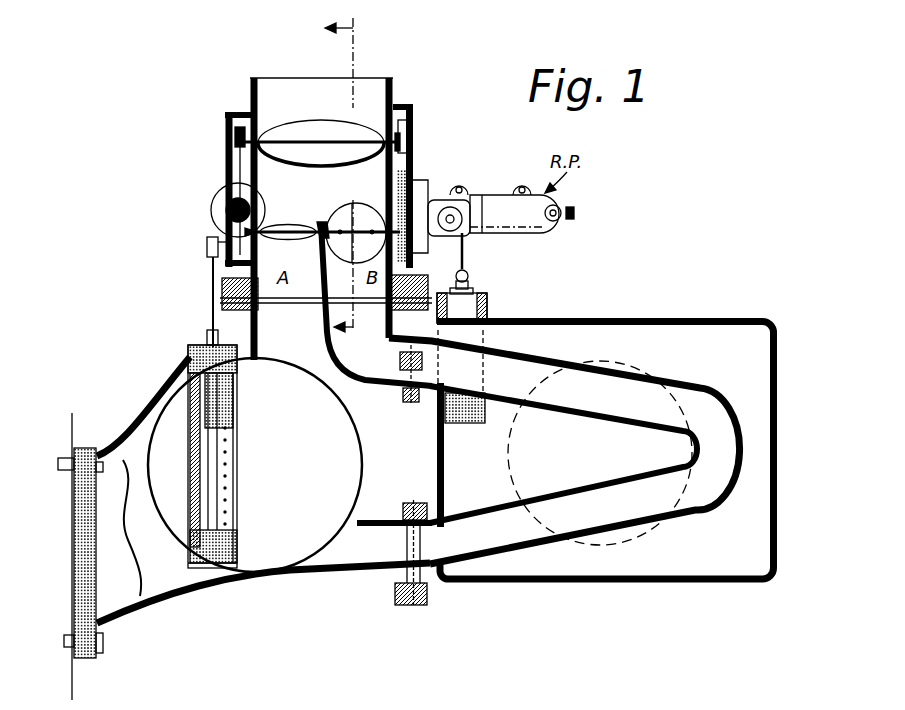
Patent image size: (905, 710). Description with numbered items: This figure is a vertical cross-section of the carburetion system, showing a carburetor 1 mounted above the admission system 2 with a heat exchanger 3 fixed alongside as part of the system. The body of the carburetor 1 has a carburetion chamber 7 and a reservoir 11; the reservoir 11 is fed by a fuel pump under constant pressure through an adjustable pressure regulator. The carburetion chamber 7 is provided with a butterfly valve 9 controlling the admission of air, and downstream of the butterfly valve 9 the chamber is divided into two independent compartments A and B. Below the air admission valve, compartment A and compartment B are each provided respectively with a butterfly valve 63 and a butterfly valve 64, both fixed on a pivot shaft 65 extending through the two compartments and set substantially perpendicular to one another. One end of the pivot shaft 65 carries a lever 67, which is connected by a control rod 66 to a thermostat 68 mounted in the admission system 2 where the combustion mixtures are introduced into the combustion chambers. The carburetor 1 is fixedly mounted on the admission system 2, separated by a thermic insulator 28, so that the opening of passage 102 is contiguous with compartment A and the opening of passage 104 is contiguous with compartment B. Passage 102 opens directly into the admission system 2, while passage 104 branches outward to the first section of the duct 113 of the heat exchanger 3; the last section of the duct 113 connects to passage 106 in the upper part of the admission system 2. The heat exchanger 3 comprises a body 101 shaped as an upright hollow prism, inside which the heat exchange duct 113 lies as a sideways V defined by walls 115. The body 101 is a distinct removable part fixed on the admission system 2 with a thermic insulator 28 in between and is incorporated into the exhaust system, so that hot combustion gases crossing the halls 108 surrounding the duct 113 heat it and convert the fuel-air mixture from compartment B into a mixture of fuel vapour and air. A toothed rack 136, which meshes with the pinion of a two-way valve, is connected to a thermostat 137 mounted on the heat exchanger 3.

The carburetor 1 is at (418, 77).
The admission system 2 is at (146, 417).
The heat exchanger 3 is at (774, 318).
The carburetion chamber 7 is at (272, 82).
The butterfly valve 9 is at (304, 130).
The reservoir 11 is at (425, 178).
The thermic insulator 28 is at (250, 302).
The butterfly valve 63 is at (290, 225).
The butterfly valve 64 is at (350, 215).
The pivot shaft 65 is at (215, 222).
The control rod 66 is at (211, 283).
The lever 67 is at (207, 247).
The thermostat 68 is at (227, 462).
The body 101 is at (712, 318).
The passage 102 is at (290, 348).
The passage 104 is at (378, 355).
The passage 106 is at (350, 548).
The halls 108 is at (643, 560).
The heat exchange duct 113 is at (583, 378).
The walls 115 is at (620, 410).
The toothed rack 136 is at (466, 252).
The thermostat 137 is at (500, 323).